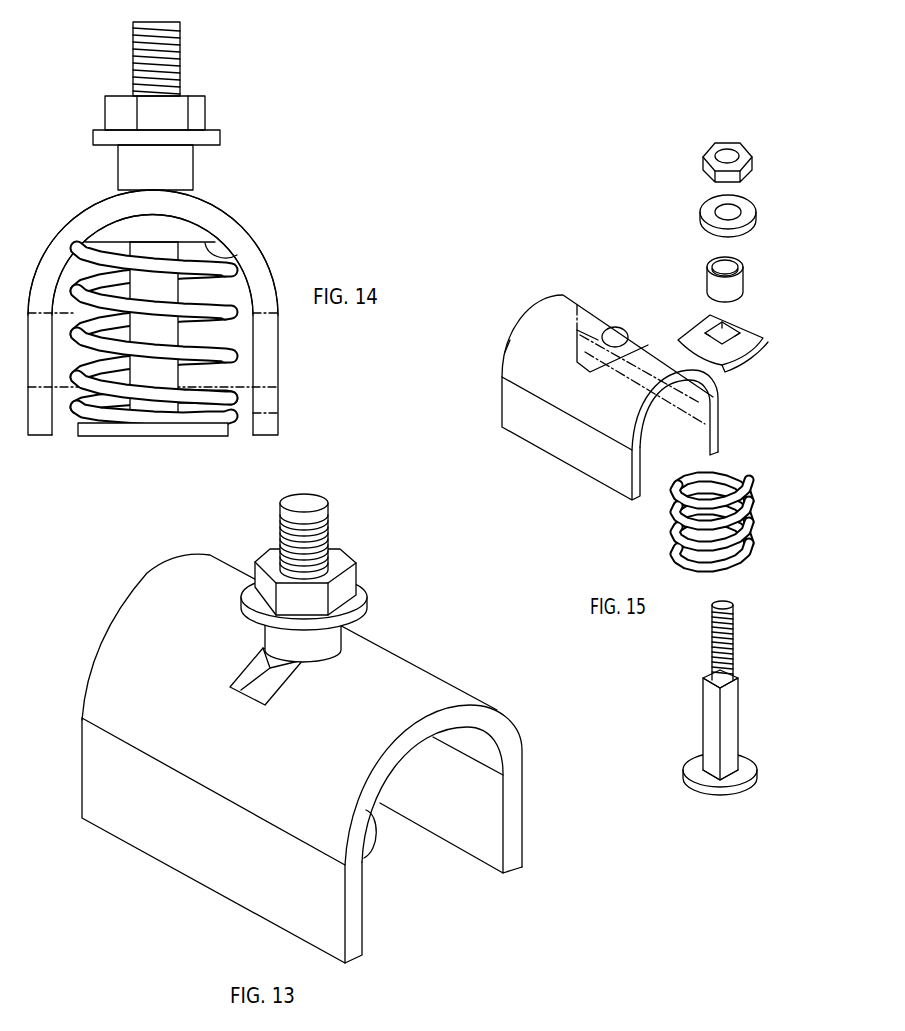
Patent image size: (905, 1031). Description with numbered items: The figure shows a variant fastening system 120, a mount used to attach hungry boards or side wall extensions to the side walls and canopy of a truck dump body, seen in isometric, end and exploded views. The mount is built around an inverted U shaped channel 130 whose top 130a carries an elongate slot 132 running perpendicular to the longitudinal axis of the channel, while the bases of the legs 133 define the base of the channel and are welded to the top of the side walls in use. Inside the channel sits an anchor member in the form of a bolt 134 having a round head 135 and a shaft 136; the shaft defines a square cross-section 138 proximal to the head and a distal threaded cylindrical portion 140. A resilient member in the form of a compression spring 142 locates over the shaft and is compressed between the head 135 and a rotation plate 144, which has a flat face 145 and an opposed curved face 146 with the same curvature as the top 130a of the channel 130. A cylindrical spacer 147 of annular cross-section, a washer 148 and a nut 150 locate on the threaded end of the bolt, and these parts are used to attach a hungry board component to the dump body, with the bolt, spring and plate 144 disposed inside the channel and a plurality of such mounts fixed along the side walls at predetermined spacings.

In FIG. 14, the fastening system 120 is at (207, 265).
In FIG. 13, the fastening system 120 is at (316, 728).
In FIG. 15, the fastening system 120 is at (663, 496).
In FIG. 14, the inverted U shaped channel 130 is at (181, 293).
In FIG. 13, the inverted U shaped channel 130 is at (316, 758).
In FIG. 15, the inverted U shaped channel 130 is at (597, 383).
In FIG. 14, the top of the channel 130a is at (108, 210).
In FIG. 13, the top of the channel 130a is at (180, 603).
In FIG. 13, the elongate slot 132 is at (362, 643).
In FIG. 15, the elongate slot 132 is at (625, 330).
In FIG. 13, the legs of the channel 133 is at (522, 828).
In FIG. 14, the bolt 134 is at (148, 385).
In FIG. 15, the bolt 134 is at (692, 725).
In FIG. 15, the round head 135 is at (738, 790).
In FIG. 15, the shaft 136 is at (705, 702).
In FIG. 15, the square cross-section 138 is at (712, 742).
In FIG. 15, the threaded cylindrical portion 140 is at (745, 640).
In FIG. 15, the compression spring 142 is at (673, 533).
In FIG. 15, the rotation plate 144 is at (730, 354).
In FIG. 14, the flat face 145 is at (237, 258).
In FIG. 14, the curved face 146 is at (178, 217).
In FIG. 15, the cylindrical spacer 147 is at (706, 281).
In FIG. 15, the washer 148 is at (700, 212).
In FIG. 15, the nut 150 is at (704, 167).